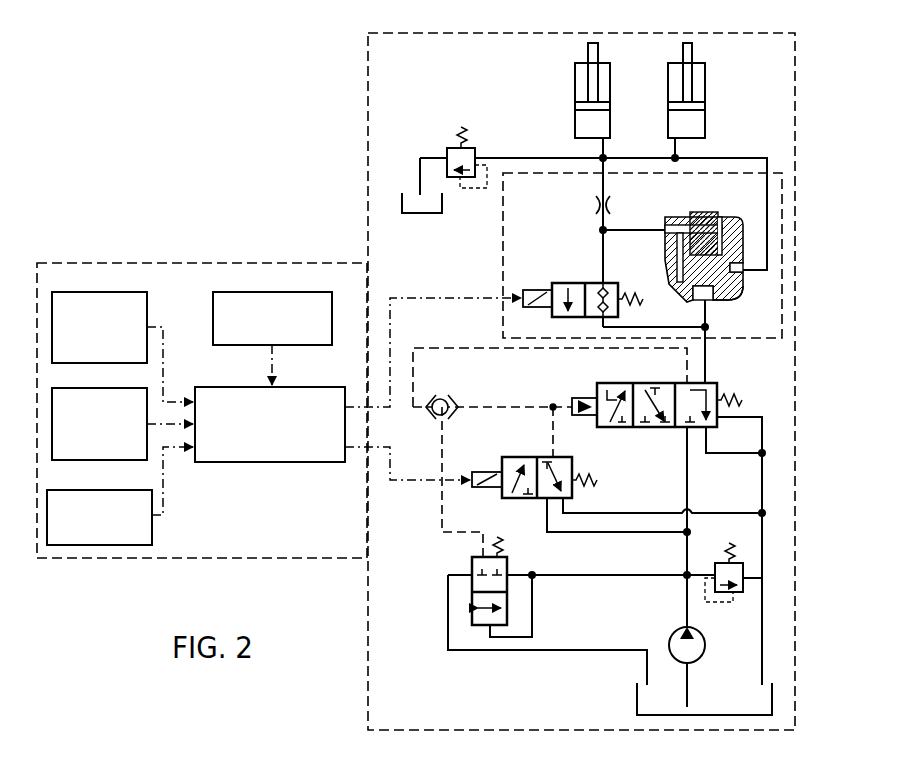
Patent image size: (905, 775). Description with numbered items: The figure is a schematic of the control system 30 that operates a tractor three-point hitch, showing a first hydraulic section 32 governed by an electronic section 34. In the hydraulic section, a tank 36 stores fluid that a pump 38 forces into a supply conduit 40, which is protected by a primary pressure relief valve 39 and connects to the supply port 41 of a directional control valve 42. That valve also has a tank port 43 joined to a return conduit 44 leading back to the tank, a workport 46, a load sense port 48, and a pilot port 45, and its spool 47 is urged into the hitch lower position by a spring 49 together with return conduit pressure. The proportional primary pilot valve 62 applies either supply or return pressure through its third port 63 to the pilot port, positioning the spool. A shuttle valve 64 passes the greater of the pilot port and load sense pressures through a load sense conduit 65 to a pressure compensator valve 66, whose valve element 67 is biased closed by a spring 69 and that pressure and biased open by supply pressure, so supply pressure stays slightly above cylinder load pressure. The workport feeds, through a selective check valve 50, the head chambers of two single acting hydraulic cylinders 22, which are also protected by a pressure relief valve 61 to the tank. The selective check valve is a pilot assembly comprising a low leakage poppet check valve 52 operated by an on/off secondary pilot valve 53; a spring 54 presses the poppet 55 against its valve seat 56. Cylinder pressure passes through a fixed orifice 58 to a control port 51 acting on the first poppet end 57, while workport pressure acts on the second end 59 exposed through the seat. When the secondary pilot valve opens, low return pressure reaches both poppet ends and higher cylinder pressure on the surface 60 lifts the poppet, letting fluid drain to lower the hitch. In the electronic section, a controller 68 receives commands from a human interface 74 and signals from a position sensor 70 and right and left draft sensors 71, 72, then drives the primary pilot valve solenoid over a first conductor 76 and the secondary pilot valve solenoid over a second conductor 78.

The control system 30 is at (262, 180).
The first hydraulic section 32 is at (368, 183).
The electronic section 34 is at (150, 263).
The hydraulic cylinders 22 is at (575, 74).
The tank 36 is at (430, 214).
The pump 38 is at (700, 656).
The primary pressure relief valve 39 is at (726, 562).
The supply conduit 40 is at (684, 620).
The supply port 41 is at (688, 428).
The directional control valve 42 is at (627, 430).
The tank port 43 is at (708, 428).
The return conduit 44 is at (762, 617).
The pilot port 45 is at (583, 398).
The workport 46 is at (662, 412).
The spool 47 is at (638, 385).
The load sense port 48 is at (685, 383).
The spring 49 is at (741, 400).
The selective check valve 50 is at (500, 248).
The control port 51 is at (671, 232).
The poppet check valve 52 is at (668, 217).
The secondary pilot valve 53 is at (575, 283).
The spring 54 is at (704, 212).
The poppet 55 is at (677, 273).
The valve seat 56 is at (720, 300).
The first poppet end 57 is at (718, 216).
The fixed orifice 58 is at (598, 206).
The second end 59 is at (693, 298).
The surface 60 is at (737, 273).
The pressure relief valve 61 is at (455, 148).
The primary pilot valve 62 is at (536, 463).
The third port 63 is at (553, 458).
The shuttle valve 64 is at (446, 397).
The load sense conduit 65 is at (443, 468).
The pressure compensator valve 66 is at (548, 603).
The valve element 67 is at (500, 563).
The controller 68 is at (270, 424).
The spring 69 is at (498, 550).
The position sensor 70 is at (152, 538).
The right draft sensor 71 is at (107, 460).
The left draft sensor 72 is at (150, 315).
The human interface 74 is at (213, 325).
The first conductor 76 is at (437, 483).
The second conductor 78 is at (440, 296).